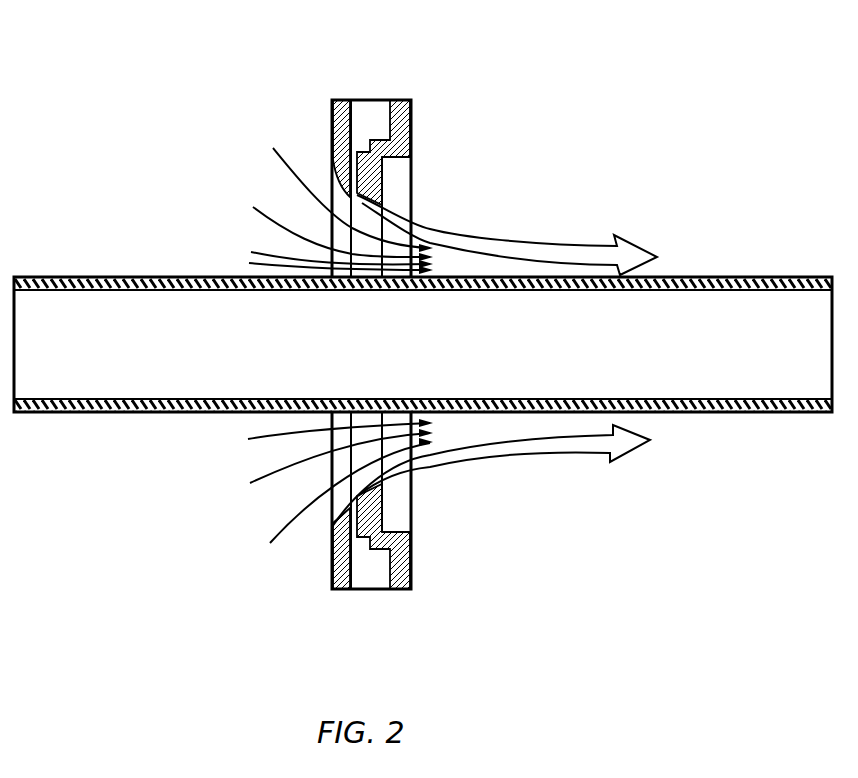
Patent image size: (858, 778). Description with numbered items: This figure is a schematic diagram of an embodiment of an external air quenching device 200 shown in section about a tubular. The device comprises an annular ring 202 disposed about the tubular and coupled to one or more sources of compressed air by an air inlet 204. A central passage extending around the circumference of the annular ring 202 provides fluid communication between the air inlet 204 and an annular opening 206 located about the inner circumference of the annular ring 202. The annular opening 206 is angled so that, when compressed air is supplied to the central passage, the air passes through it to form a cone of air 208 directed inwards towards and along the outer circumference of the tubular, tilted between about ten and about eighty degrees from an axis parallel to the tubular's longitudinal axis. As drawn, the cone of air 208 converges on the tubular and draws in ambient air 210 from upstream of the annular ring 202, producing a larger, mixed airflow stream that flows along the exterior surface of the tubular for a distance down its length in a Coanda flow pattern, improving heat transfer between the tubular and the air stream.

The external air quenching device 200 is at (467, 80).
The annular ring 202 is at (412, 132).
The air inlet 204 is at (390, 120).
The annular opening 206 is at (350, 201).
The cone of air 208 is at (525, 246).
The ambient air 210 is at (237, 428).